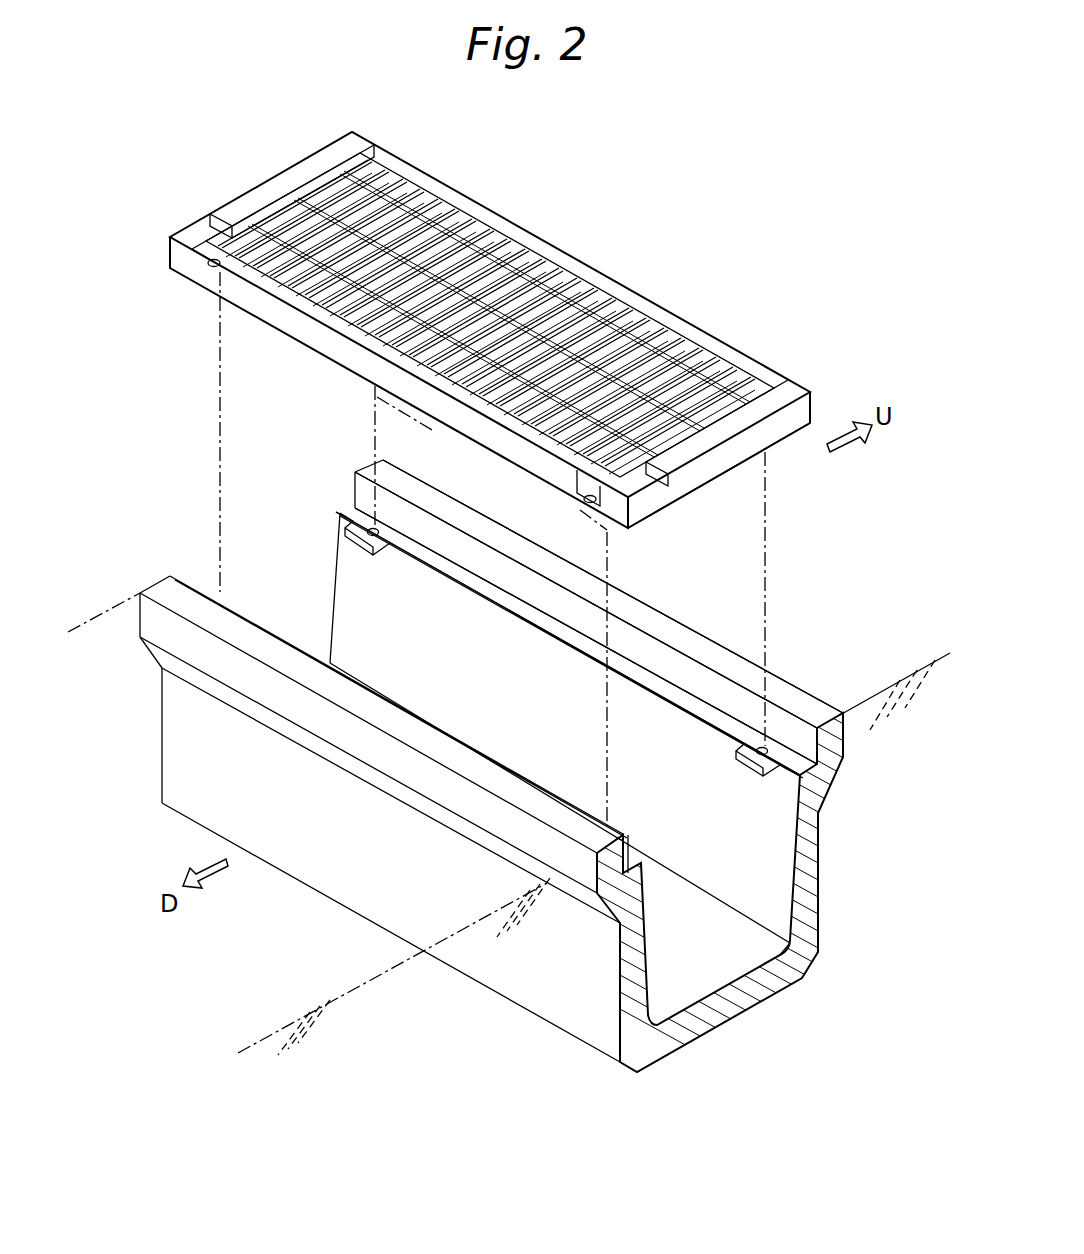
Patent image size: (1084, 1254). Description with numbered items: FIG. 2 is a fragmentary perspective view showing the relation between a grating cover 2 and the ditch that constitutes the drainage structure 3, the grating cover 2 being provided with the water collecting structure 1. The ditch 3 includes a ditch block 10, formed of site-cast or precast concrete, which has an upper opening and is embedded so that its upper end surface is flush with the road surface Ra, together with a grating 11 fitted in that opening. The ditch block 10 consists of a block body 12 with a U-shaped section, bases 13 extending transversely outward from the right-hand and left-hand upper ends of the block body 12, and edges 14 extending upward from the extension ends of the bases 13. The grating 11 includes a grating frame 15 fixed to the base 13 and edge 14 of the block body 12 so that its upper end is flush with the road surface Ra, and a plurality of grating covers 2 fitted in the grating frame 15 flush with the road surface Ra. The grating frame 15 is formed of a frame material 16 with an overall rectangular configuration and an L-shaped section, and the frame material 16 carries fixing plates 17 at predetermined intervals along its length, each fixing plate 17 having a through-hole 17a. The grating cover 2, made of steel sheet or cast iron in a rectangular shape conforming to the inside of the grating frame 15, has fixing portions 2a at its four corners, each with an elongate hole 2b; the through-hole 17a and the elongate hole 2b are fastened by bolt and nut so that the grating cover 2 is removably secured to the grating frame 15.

The water collecting structure 1 is at (490, 339).
The grating cover 2 is at (325, 340).
The fixing portion 2a is at (578, 491).
The elongate hole 2b is at (596, 498).
The drainage structure 3 is at (741, 258).
The ditch block 10 is at (531, 811).
The grating 11 is at (815, 533).
The block body 12 is at (818, 850).
The base 13 is at (838, 791).
The edge 14 is at (838, 748).
The grating frame 15 is at (647, 657).
The frame material 16 is at (707, 687).
The fixing plate 17 is at (733, 752).
The through-hole 17a is at (759, 762).
The road surface Ra is at (870, 698).